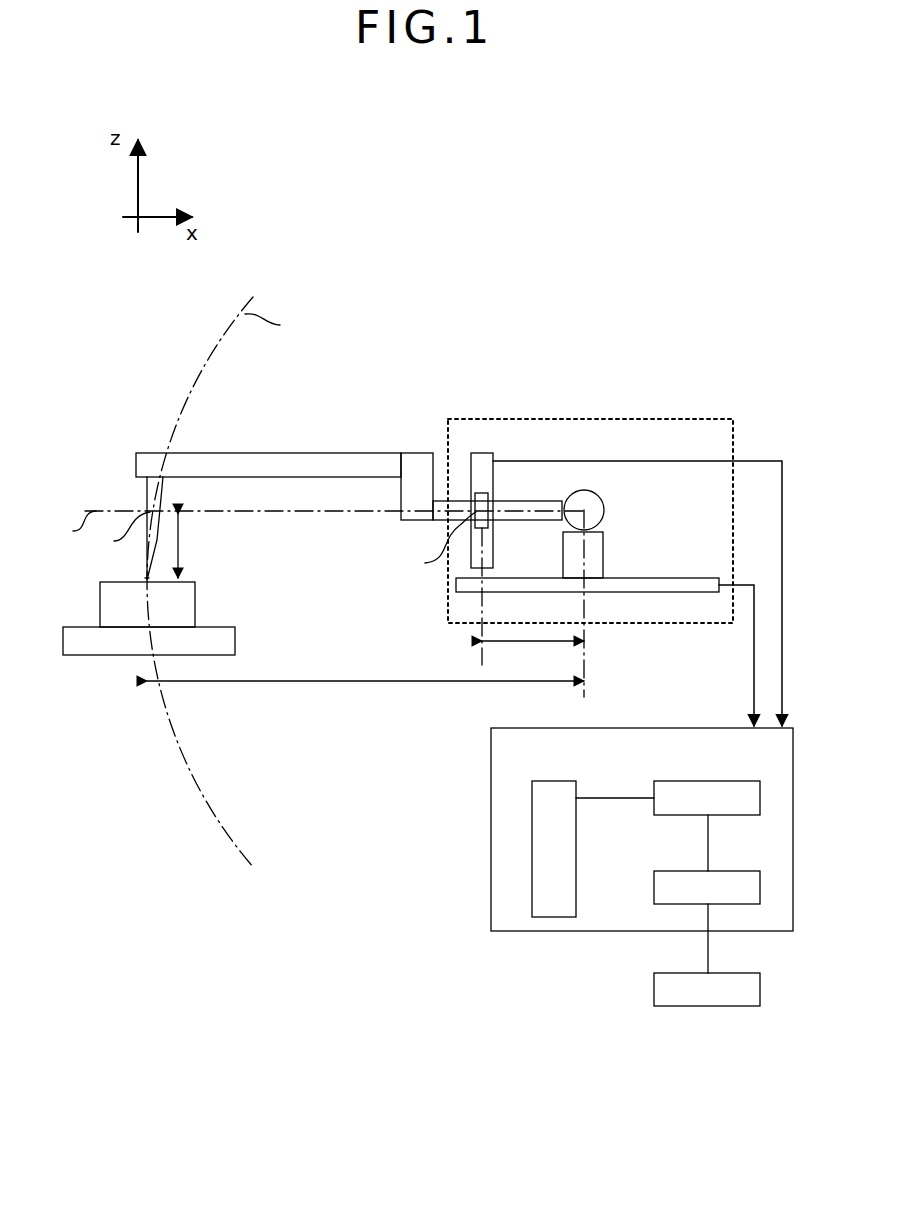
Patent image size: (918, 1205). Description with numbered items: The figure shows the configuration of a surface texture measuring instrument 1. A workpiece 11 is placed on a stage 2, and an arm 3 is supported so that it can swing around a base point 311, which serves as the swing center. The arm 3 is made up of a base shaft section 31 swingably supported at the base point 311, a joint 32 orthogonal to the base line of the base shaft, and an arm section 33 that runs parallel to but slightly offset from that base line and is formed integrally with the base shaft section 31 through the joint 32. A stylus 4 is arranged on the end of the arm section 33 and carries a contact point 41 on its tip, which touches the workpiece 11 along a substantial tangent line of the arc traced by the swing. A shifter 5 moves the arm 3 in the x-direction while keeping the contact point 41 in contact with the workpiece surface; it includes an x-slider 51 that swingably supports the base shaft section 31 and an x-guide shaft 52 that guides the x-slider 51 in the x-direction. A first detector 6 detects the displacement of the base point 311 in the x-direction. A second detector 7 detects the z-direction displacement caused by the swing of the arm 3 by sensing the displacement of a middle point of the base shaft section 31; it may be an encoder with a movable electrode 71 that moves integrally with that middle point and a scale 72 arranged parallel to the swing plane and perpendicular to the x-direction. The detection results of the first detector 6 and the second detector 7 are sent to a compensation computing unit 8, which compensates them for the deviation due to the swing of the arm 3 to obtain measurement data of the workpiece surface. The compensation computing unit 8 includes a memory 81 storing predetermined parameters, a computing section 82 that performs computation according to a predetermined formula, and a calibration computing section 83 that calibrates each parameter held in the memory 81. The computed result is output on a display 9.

The surface texture measuring instrument 1 is at (558, 271).
The stage 2 is at (105, 644).
The arm 3 is at (372, 432).
The stylus 4 is at (160, 490).
The shifter 5 is at (651, 545).
The first detector 6 is at (679, 564).
The second detector 7 is at (472, 432).
The compensation computing unit 8 is at (607, 728).
The display 9 is at (727, 973).
The workpiece 11 is at (192, 604).
The base shaft section 31 is at (540, 501).
The joint 32 is at (417, 457).
The arm section 33 is at (322, 457).
The contact point 41 is at (146, 579).
The x-slider 51 is at (603, 545).
The x-guide shaft 52 is at (670, 587).
The movable electrode 71 is at (490, 483).
The scale 72 is at (485, 453).
The memory 81 is at (727, 781).
The computing section 82 is at (727, 871).
The calibration computing section 83 is at (577, 828).
The base point 311 is at (584, 510).